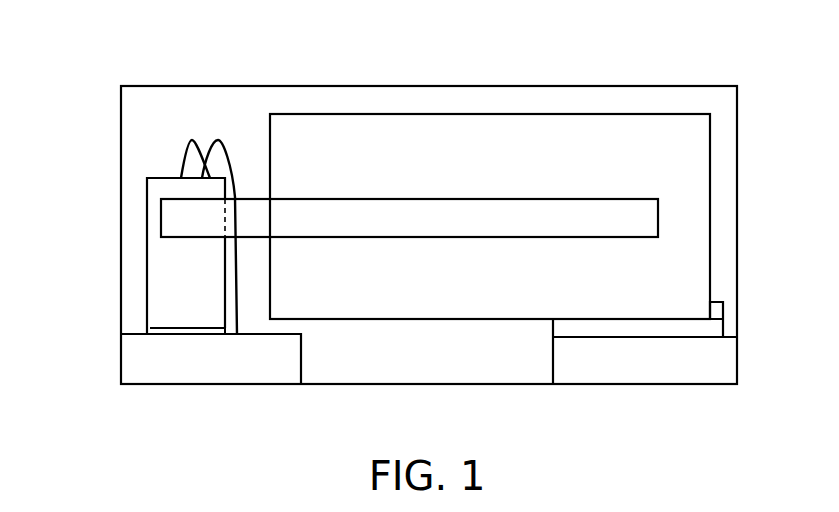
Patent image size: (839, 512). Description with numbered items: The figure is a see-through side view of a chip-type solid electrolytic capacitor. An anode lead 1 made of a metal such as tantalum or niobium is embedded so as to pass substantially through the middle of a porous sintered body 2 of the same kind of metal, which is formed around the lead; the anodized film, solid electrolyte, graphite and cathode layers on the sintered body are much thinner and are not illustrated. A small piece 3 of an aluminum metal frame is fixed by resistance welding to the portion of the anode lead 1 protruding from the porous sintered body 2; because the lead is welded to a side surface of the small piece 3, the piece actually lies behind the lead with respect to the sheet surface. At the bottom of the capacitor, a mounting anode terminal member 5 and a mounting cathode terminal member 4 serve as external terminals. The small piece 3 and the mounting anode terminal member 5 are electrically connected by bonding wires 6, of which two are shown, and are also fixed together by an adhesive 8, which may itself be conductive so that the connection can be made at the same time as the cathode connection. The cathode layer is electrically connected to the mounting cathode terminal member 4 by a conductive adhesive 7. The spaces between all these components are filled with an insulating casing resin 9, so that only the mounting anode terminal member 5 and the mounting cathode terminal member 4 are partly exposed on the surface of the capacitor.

The anode lead 1 is at (573, 206).
The porous sintered body 2 is at (700, 208).
The small piece of metal frame 3 is at (152, 278).
The mounting cathode terminal member 4 is at (718, 375).
The mounting anode terminal member 5 is at (130, 373).
The bonding wires 6 is at (180, 163).
The conductive adhesive 7 is at (715, 321).
The adhesive 8 is at (145, 327).
The insulating casing resin 9 is at (723, 120).